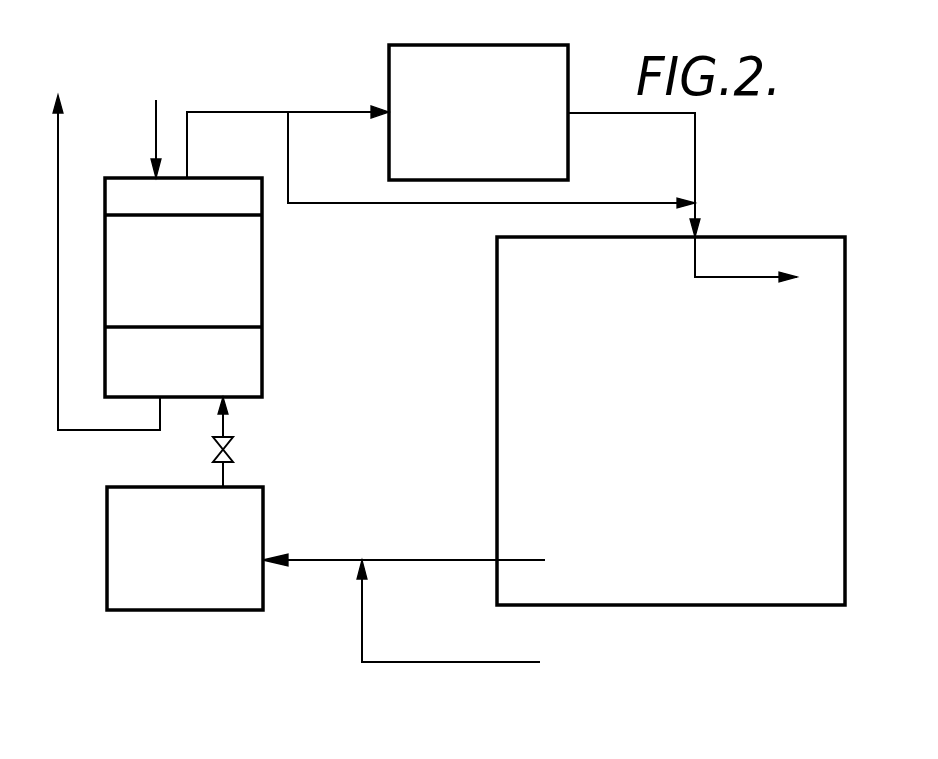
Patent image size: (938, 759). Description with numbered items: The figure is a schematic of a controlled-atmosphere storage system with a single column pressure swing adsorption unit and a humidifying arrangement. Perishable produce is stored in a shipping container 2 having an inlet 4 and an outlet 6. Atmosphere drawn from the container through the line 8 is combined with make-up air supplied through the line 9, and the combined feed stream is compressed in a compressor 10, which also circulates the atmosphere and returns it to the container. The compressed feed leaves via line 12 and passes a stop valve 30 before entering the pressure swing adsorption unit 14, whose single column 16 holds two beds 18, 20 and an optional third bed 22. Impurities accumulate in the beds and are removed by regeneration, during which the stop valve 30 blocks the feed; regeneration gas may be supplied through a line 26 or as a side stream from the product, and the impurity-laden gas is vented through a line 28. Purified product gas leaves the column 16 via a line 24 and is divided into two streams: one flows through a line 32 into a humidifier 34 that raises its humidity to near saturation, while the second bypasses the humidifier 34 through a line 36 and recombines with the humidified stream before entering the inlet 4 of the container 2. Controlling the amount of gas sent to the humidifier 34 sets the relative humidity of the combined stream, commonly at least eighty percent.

The shipping container 2 is at (512, 372).
The inlet 4 is at (700, 236).
The outlet 6 is at (500, 553).
The line 8 is at (403, 561).
The line 9 is at (362, 645).
The compressor 10 is at (181, 567).
The line 12 is at (225, 472).
The pressure swing adsorption unit 14 is at (297, 296).
The column 16 is at (265, 319).
The bed 18 is at (243, 375).
The bed 20 is at (263, 252).
The third bed 22 is at (117, 198).
The line 24 is at (187, 158).
The line 26 is at (156, 126).
The line 28 is at (58, 395).
The stop valve 30 is at (238, 449).
The line 32 is at (317, 110).
The humidifier 34 is at (415, 143).
The line 36 is at (528, 204).